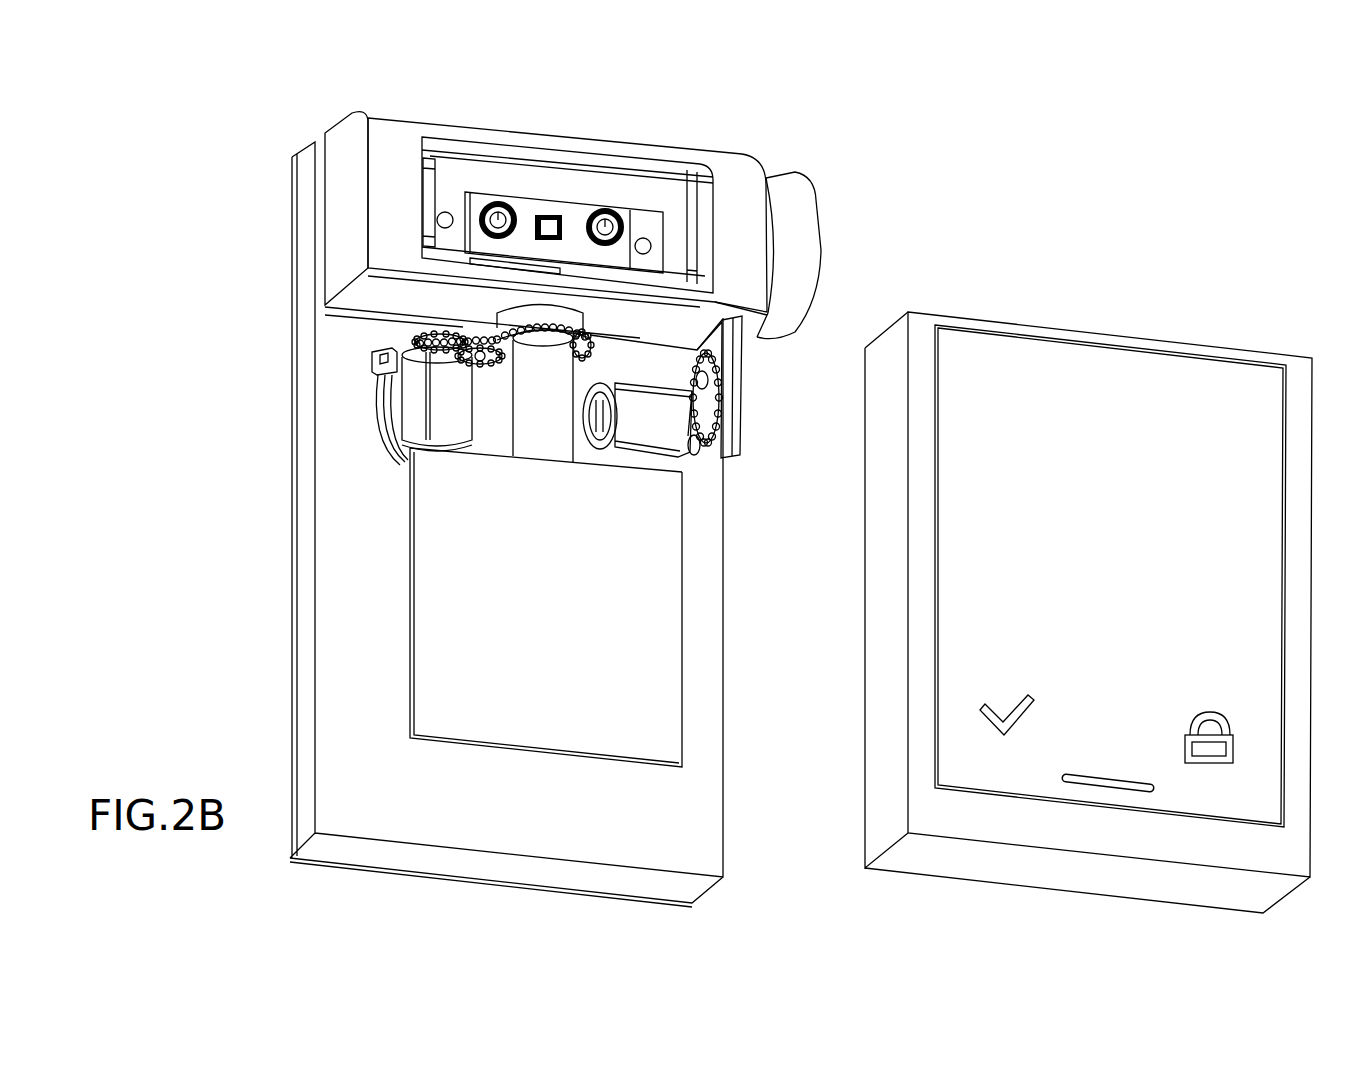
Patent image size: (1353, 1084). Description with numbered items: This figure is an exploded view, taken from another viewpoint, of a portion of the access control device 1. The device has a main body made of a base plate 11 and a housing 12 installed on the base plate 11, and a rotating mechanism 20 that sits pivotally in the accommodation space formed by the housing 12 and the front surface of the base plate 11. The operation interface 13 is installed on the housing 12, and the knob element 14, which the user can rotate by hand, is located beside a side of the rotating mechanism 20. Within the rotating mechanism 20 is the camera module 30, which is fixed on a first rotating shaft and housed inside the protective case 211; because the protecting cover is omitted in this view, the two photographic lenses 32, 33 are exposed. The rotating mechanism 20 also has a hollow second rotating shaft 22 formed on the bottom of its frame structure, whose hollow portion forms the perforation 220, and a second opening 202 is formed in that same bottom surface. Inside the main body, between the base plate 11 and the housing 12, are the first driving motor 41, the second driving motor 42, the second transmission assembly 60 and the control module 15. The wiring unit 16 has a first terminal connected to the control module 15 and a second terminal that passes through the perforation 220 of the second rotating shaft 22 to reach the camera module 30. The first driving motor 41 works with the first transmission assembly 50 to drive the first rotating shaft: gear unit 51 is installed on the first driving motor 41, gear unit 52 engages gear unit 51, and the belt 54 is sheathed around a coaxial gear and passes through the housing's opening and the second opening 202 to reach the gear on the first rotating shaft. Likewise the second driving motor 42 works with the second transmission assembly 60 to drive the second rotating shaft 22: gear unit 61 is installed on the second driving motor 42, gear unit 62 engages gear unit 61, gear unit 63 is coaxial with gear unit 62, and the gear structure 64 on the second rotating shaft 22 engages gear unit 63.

The access control device 1 is at (1190, 146).
The base plate 11 is at (307, 573).
The housing 12 is at (882, 640).
The operation interface 13 is at (1185, 372).
The knob element 14 is at (805, 243).
The control module 15 is at (580, 740).
The wiring unit 16 is at (547, 442).
The rotating mechanism 20 is at (347, 142).
The second rotating shaft 22 is at (572, 317).
The camera module 30 is at (527, 208).
The photographic lens 32 is at (608, 217).
The photographic lens 33 is at (500, 200).
The first driving motor 41 is at (648, 437).
The second driving motor 42 is at (413, 408).
The first transmission assembly 50 is at (753, 460).
The gear unit 51 is at (710, 433).
The gear unit 52 is at (717, 370).
The belt 54 is at (705, 365).
The second transmission assembly 60 is at (391, 360).
The gear unit 61 is at (415, 337).
The gear unit 62 is at (500, 368).
The gear unit 63 is at (463, 322).
The gear structure 64 is at (538, 338).
The second opening 202 is at (757, 335).
The protective case 211 is at (677, 237).
The perforation 220 is at (573, 352).